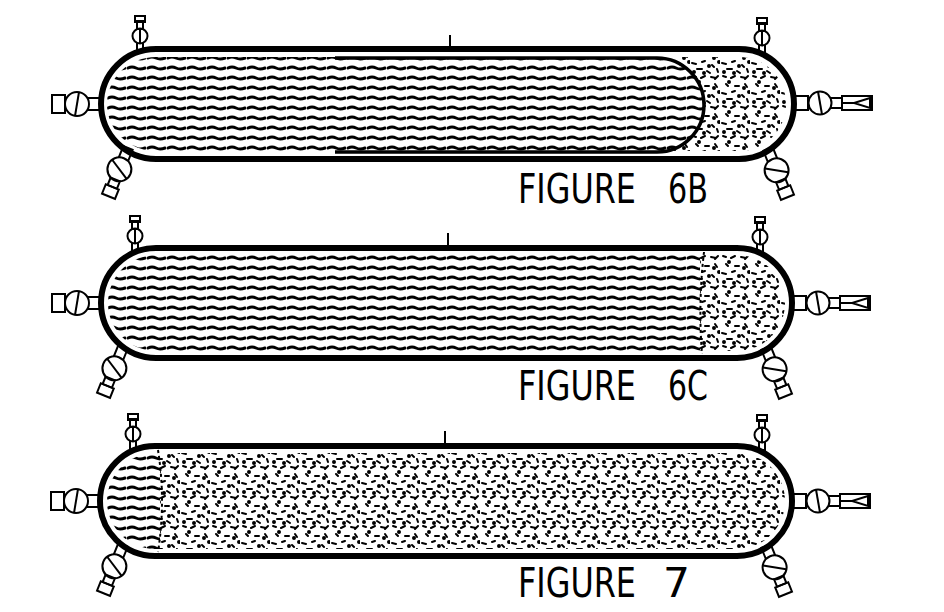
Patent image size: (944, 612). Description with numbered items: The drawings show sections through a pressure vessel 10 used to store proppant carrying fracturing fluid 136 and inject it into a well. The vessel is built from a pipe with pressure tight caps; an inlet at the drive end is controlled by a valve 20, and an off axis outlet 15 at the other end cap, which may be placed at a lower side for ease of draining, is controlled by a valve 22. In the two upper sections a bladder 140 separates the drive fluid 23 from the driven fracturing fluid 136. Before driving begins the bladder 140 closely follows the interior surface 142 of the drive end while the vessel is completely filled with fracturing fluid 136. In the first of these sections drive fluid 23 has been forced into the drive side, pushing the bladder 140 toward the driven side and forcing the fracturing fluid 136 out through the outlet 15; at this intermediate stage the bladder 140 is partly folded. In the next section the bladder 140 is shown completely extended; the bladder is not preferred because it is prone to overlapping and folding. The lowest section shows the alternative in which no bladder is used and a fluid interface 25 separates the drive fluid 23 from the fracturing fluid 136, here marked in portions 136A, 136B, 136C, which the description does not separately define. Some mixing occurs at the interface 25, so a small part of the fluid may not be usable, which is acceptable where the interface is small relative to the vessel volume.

In FIG. 6B, the pressure vessel 10 is at (410, 52).
In FIG. 6C, the pressure vessel 10 is at (284, 248).
In FIG. 7, the pressure vessel 10 is at (250, 400).
In FIG. 6B, the outlet 15 is at (803, 118).
In FIG. 6C, the outlet 15 is at (808, 292).
In FIG. 7, the valve 20 is at (78, 485).
In FIG. 7, the valve 22 is at (822, 487).
In FIG. 6B, the drive fluid 23 is at (203, 80).
In FIG. 6C, the drive fluid 23 is at (183, 283).
In FIG. 7, the drive fluid 23 is at (148, 453).
In FIG. 7, the interface 25 is at (162, 557).
In FIG. 6B, the proppant carrying fracturing fluid 136 is at (787, 60).
In FIG. 6C, the proppant carrying fracturing fluid 136 is at (784, 258).
In FIG. 7, the proppant carrying fracturing fluid 136 is at (472, 499).
In FIG. 7, the liquid carbon dioxide first portion 136A is at (213, 603).
In FIG. 7, the liquid carbon dioxide second portion 136B is at (335, 597).
In FIG. 7, the liquid carbon dioxide third portion 136C is at (717, 532).
In FIG. 6B, the bladder 140 is at (687, 62).
In FIG. 6C, the bladder 140 is at (712, 250).
In FIG. 6B, the interior surface 142 is at (366, 12).